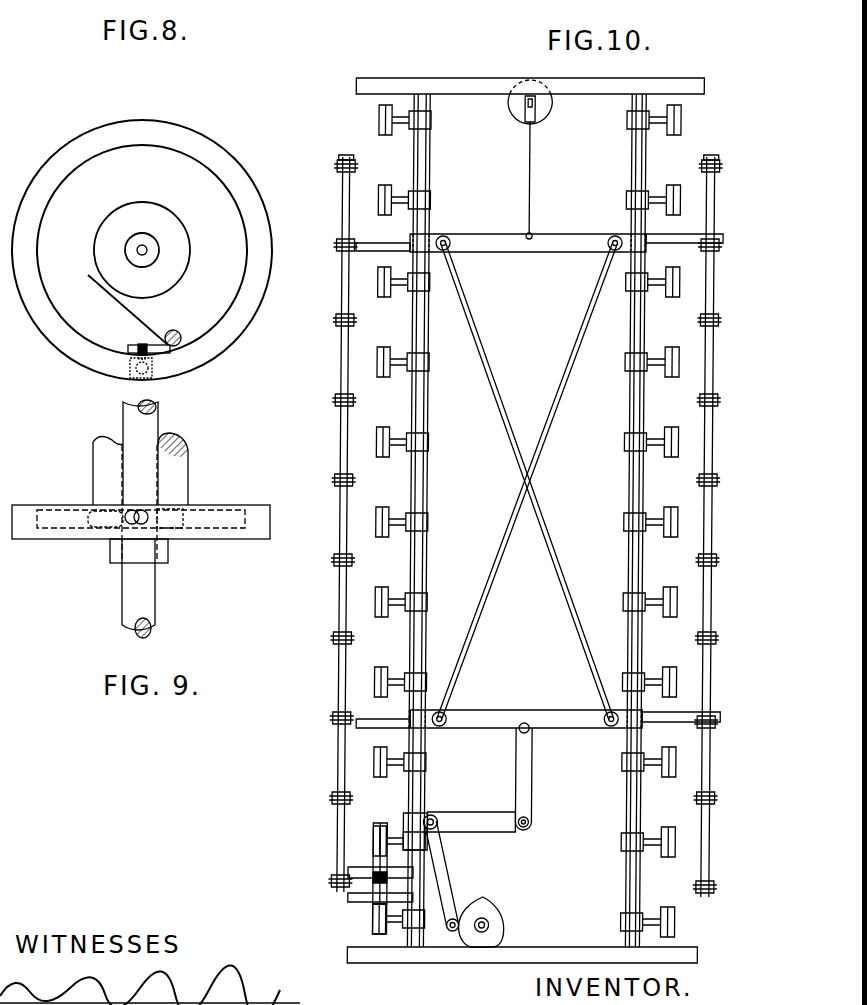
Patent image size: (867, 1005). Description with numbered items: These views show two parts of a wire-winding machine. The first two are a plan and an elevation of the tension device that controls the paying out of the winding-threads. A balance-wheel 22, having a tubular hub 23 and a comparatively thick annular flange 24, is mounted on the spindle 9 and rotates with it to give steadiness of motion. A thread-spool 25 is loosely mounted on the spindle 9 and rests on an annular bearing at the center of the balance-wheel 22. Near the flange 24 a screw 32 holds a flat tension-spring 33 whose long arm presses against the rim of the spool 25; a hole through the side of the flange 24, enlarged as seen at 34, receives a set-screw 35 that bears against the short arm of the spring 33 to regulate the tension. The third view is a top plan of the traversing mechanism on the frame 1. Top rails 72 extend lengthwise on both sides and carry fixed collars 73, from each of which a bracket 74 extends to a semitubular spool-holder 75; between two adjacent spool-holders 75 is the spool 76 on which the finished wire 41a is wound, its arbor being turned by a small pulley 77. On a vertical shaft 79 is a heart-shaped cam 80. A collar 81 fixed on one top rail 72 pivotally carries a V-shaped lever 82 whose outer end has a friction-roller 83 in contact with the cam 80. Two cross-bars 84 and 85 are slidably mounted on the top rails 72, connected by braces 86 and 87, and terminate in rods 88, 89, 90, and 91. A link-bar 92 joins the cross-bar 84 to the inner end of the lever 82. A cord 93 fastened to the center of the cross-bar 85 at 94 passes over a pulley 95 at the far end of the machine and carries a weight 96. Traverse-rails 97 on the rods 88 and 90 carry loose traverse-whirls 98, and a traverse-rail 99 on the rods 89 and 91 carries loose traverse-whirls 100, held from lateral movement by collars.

In FIG. 10, the frame 1 is at (469, 63).
In FIG. 8, the spindle 9 is at (161, 243).
In FIG. 9, the spindle 9 is at (148, 519).
In FIG. 8, the balance-wheel 22 is at (232, 262).
In FIG. 9, the balance-wheel 22 is at (222, 541).
In FIG. 9, the tubular hub 23 is at (109, 560).
In FIG. 8, the annular flange 24 is at (251, 289).
In FIG. 8, the thread-spool 25 is at (92, 240).
In FIG. 9, the thread-spool 25 is at (189, 462).
In FIG. 8, the screw 32 is at (182, 333).
In FIG. 9, the screw 32 is at (179, 505).
In FIG. 8, the flat tension-spring 33 is at (146, 313).
In FIG. 9, the flat tension-spring 33 is at (84, 518).
In FIG. 8, the enlarged hole 34 is at (150, 384).
In FIG. 8, the set-screw 35 is at (137, 347).
In FIG. 9, the set-screw 35 is at (148, 513).
In FIG. 10, the finished wire 41a is at (357, 877).
In FIG. 10, the top rails 72 is at (432, 556).
In FIG. 10, the collars 73 is at (434, 522).
In FIG. 10, the bracket 74 is at (401, 533).
In FIG. 10, the semitubular spool-holder 75 is at (385, 506).
In FIG. 10, the spool 76 is at (354, 897).
In FIG. 10, the small pulley 77 is at (380, 870).
In FIG. 10, the vertical shaft 79 is at (498, 925).
In FIG. 10, the heart-shaped cam 80 is at (506, 906).
In FIG. 10, the collar 81 is at (408, 815).
In FIG. 10, the V-shaped lever 82 is at (448, 874).
In FIG. 10, the friction-roller 83 is at (461, 935).
In FIG. 10, the cross-bar 84 is at (479, 730).
In FIG. 10, the cross-bar 85 is at (567, 254).
In FIG. 10, the brace 86 is at (527, 481).
In FIG. 10, the brace 87 is at (527, 481).
In FIG. 10, the rod 88 is at (376, 706).
In FIG. 10, the rod 89 is at (690, 711).
In FIG. 10, the rod 90 is at (391, 243).
In FIG. 10, the rod 91 is at (689, 234).
In FIG. 10, the link-bar 92 is at (540, 787).
In FIG. 10, the cord 93 is at (534, 182).
In FIG. 10, the fastening point 94 is at (529, 253).
In FIG. 10, the pulley 95 is at (538, 120).
In FIG. 10, the weight 96 is at (512, 115).
In FIG. 10, the traverse-rail 97 is at (342, 528).
In FIG. 10, the traverse-whirls 98 is at (336, 882).
In FIG. 10, the traverse-rail 99 is at (722, 602).
In FIG. 10, the traverse-whirls 100 is at (724, 637).